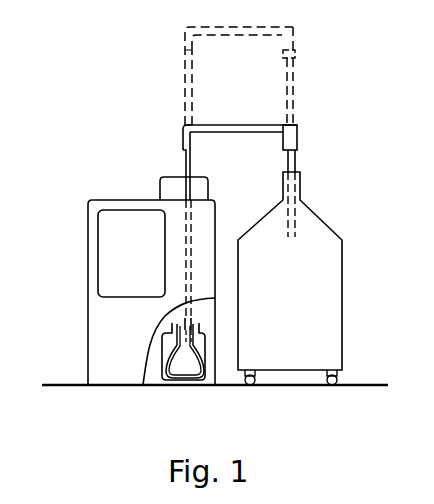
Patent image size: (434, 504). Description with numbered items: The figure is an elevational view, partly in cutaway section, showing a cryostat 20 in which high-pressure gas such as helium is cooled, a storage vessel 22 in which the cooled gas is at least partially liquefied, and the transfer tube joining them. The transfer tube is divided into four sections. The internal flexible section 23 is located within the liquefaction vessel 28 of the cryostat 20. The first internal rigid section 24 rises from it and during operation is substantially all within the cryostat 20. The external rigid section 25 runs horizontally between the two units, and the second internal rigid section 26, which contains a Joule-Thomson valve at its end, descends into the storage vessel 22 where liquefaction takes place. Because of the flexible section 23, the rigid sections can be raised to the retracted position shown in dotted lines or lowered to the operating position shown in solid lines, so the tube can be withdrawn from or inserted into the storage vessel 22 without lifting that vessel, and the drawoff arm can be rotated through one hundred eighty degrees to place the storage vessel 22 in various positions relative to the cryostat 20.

The cryostat 20 is at (98, 326).
The storage vessel 22 is at (312, 222).
The internal flexible section 23 is at (184, 378).
The first internal rigid section 24 is at (185, 165).
The external rigid section 25 is at (267, 125).
The second internal rigid section 26 is at (296, 160).
The liquefaction vessel 28 is at (210, 380).